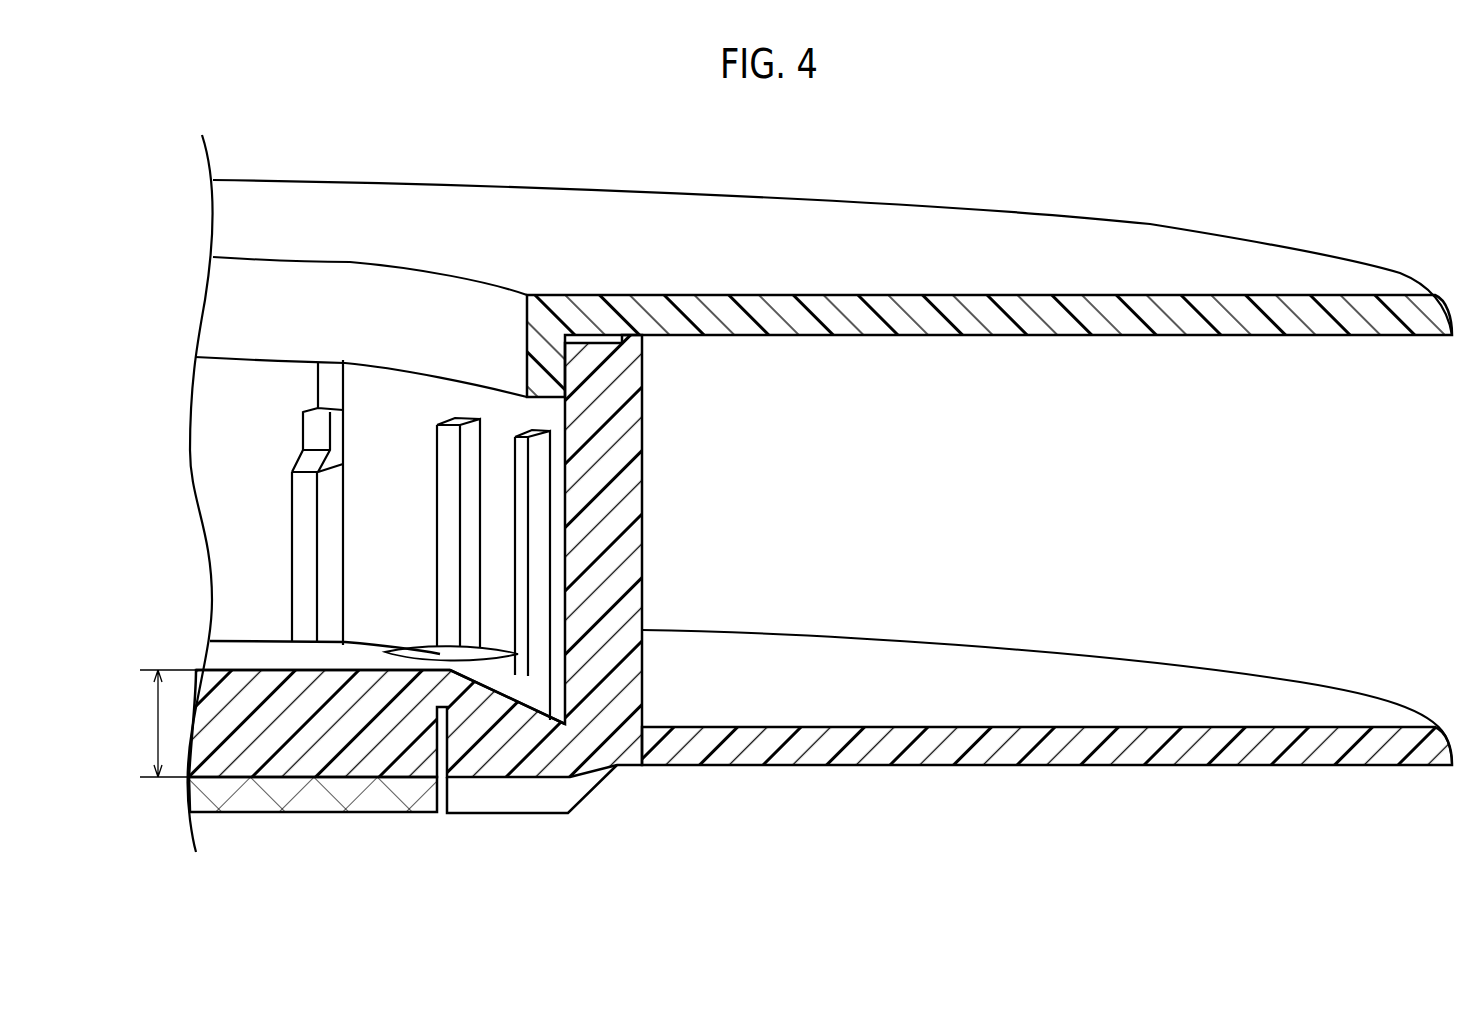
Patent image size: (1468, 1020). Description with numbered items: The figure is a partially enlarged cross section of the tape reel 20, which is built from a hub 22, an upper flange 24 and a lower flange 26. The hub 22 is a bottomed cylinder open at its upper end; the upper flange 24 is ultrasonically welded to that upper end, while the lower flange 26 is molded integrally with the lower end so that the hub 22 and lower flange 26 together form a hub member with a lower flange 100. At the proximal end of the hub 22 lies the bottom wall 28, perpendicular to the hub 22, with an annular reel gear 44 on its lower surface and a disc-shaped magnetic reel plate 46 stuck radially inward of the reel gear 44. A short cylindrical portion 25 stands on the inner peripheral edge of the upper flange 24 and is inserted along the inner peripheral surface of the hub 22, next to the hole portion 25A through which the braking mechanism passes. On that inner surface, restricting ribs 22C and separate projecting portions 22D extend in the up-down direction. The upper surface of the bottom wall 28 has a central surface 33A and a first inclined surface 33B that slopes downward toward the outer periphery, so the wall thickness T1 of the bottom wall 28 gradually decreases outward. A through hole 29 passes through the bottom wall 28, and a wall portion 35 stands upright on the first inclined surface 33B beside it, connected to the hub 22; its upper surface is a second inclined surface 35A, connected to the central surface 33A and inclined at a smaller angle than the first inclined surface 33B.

The tape reel 20 is at (752, 173).
The hub 22 is at (657, 496).
The restricting ribs 22C is at (520, 480).
The projecting portions 22D is at (338, 388).
The upper flange 24 is at (487, 197).
The short cylindrical portion 25 is at (240, 362).
The hole portion 25A is at (246, 305).
The lower flange 26 is at (1018, 768).
The bottom wall 28 is at (199, 657).
The through hole 29 is at (490, 648).
The central surface 33A is at (265, 650).
The first inclined surface 33B is at (505, 683).
The wall portion 35 is at (525, 688).
The second inclined surface 35A is at (535, 670).
The reel gear 44 is at (503, 800).
The reel plate 46 is at (256, 797).
The hub member with a lower flange 100 is at (1298, 768).
The wall thickness T1 is at (158, 725).